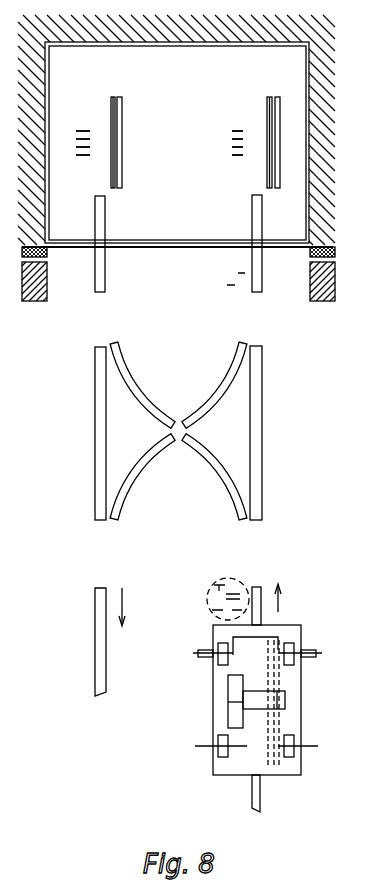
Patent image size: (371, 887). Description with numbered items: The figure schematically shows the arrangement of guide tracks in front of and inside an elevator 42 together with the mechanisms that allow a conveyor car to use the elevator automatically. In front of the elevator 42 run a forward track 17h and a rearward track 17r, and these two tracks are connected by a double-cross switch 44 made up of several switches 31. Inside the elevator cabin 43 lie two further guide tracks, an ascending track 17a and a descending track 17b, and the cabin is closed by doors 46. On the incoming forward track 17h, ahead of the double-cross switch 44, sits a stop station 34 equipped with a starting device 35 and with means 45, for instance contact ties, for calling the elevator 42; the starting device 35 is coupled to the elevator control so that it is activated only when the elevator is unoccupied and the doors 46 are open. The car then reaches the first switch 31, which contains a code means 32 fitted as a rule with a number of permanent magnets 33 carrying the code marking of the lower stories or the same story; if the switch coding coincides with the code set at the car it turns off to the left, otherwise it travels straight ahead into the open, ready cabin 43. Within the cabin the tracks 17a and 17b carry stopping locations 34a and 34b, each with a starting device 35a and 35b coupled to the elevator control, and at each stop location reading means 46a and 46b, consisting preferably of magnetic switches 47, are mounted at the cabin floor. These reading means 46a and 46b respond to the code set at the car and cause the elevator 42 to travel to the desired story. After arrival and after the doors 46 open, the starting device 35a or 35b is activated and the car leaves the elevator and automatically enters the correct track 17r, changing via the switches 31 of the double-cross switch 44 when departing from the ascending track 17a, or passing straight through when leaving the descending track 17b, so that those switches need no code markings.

The elevator 42 is at (192, 83).
The elevator cabin 43 is at (186, 242).
The doors 46 is at (310, 253).
The stopping location 34a is at (260, 96).
The stopping location 34b is at (94, 96).
The starting device 35a is at (270, 165).
The starting device 35b is at (122, 157).
The magnetic switches 47 is at (75, 141).
The reading means 46a is at (234, 165).
The reading means 46b is at (82, 165).
The guide track 17a is at (262, 216).
The guide track 17b is at (105, 215).
The switch 31 is at (110, 323).
The double-cross switch 44 is at (264, 427).
The permanent magnets 33 is at (214, 497).
The code means 32 is at (208, 596).
The rearward track 17r is at (97, 650).
The means for calling the elevator 45 is at (302, 651).
The starting device 35 is at (278, 676).
The stop station 34 is at (263, 727).
The forward track 17h is at (262, 793).